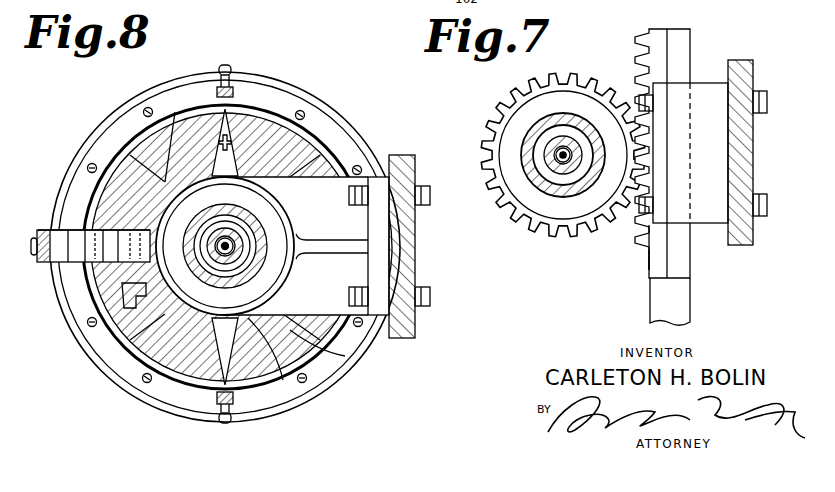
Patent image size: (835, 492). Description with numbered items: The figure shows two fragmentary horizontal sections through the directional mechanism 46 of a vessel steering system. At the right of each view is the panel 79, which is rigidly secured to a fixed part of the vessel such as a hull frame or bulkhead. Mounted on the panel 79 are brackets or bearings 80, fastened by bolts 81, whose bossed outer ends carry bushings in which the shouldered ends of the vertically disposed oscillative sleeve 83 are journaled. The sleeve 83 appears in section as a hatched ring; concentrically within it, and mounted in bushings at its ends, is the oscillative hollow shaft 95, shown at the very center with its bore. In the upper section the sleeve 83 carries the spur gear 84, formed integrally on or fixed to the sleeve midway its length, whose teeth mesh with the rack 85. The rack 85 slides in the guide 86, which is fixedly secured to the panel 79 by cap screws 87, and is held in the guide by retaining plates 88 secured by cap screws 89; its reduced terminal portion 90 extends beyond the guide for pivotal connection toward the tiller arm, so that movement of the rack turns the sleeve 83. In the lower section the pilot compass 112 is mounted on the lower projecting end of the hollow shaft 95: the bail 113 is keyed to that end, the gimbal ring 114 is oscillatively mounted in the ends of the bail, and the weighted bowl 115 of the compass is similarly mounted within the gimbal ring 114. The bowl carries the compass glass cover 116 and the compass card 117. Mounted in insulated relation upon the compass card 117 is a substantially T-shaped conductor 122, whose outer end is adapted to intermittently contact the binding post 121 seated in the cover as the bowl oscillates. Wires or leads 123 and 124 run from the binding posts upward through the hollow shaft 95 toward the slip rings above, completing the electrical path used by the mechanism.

In FIG. 7, the directional mechanism 46 is at (557, 268).
In FIG. 8, the panel 79 is at (416, 258).
In FIG. 7, the panel 79 is at (754, 141).
In FIG. 8, the brackets or bearings 80 is at (318, 176).
In FIG. 8, the bolts 81 is at (430, 194).
In FIG. 8, the oscillative sleeve 83 is at (253, 221).
In FIG. 7, the oscillative sleeve 83 is at (567, 125).
In FIG. 7, the spur gear 84 is at (540, 237).
In FIG. 7, the rack 85 is at (640, 268).
In FIG. 7, the guide 86 is at (708, 224).
In FIG. 7, the cap screws 87 is at (767, 101).
In FIG. 7, the retaining plates 88 is at (636, 246).
In FIG. 7, the cap screws 89 is at (640, 93).
In FIG. 7, the reduced terminal portion 90 is at (692, 305).
In FIG. 8, the hollow shaft 95 is at (237, 254).
In FIG. 7, the hollow shaft 95 is at (550, 142).
In FIG. 8, the pilot compass 112 is at (85, 362).
In FIG. 8, the bail 113 is at (50, 266).
In FIG. 8, the gimbal ring 114 is at (163, 408).
In FIG. 8, the weighted bowl 115 is at (345, 356).
In FIG. 8, the compass glass cover 116 is at (283, 380).
In FIG. 8, the compass card 117 is at (232, 135).
In FIG. 8, the binding post 121 is at (95, 208).
In FIG. 8, the T-shaped member or conductor 122 is at (128, 312).
In FIG. 7, the wire or lead 123 is at (557, 154).
In FIG. 7, the wire or lead 124 is at (524, 210).